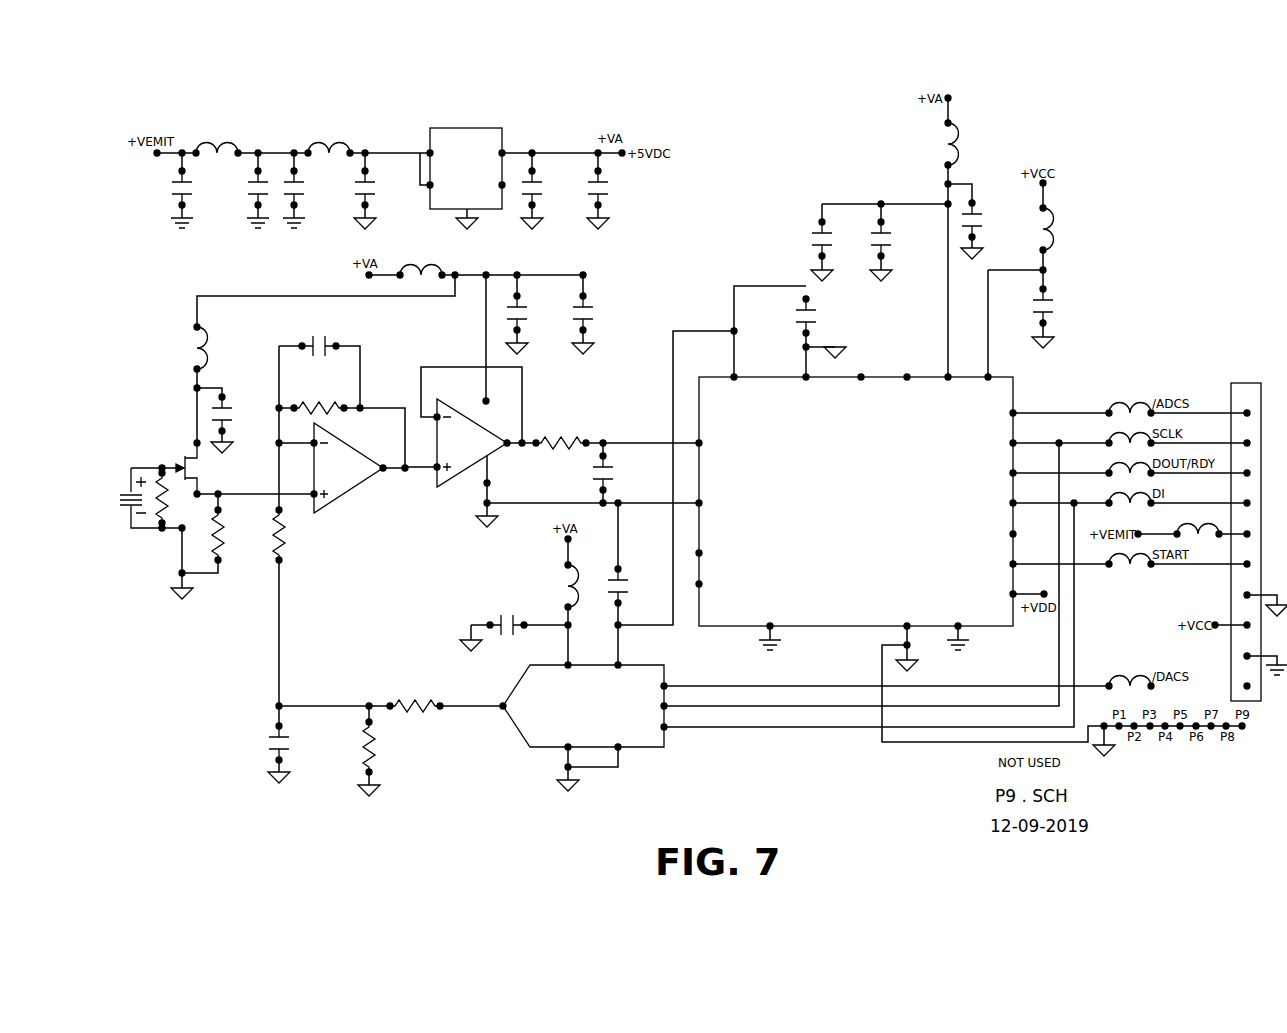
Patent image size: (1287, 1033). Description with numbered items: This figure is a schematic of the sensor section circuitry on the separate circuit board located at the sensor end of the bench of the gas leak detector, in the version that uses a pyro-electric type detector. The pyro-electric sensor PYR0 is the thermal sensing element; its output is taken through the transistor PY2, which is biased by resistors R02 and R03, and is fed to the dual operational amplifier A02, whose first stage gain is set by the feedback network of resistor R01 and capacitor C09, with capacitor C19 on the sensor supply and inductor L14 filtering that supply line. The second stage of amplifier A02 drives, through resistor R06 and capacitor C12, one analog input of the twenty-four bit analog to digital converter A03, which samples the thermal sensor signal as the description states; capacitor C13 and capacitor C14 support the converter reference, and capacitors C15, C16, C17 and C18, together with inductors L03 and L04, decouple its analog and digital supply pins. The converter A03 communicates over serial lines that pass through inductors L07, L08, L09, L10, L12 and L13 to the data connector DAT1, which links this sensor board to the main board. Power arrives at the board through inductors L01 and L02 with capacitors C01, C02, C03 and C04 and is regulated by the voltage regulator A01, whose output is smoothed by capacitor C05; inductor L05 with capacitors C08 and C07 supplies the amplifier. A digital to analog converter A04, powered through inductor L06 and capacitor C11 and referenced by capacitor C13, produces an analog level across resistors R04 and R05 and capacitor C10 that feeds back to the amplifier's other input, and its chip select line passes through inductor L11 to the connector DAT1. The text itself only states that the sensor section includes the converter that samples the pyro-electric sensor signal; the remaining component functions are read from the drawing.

The capacitor 0.01UF C01 is at (158, 188).
The capacitor 0.01UF C02 is at (235, 188).
The capacitor 0.1UF C03 is at (464, 188).
The capacitor 1UF C04 is at (377, 188).
The capacitor 10UF C05 is at (548, 188).
The capacitor 1UF C07 is at (595, 313).
The capacitor 0.1UF C08 is at (535, 313).
The capacitor 0.01UF C09 is at (318, 329).
The capacitor 0.1UF C10 is at (298, 743).
The capacitor 0.1UF C11 is at (507, 607).
The capacitor 0.1UF C12 is at (621, 473).
The capacitor 0.1UF C13 is at (636, 586).
The capacitor 1UF C14 is at (819, 316).
The capacitor 1UF C15 is at (835, 239).
The capacitor 0.1UF C16 is at (900, 239).
The capacitor 0.01UF C17 is at (995, 220).
The capacitor 1UF C18 is at (1056, 306).
The capacitor 0.1UF C19 is at (240, 414).
The inductor L01 is at (217, 143).
The inductor L02 is at (329, 143).
The inductor L03 is at (963, 144).
The inductor L04 is at (1058, 229).
The inductor L05 is at (421, 265).
The inductor L06 is at (559, 586).
The inductor L07 is at (1118, 406).
The inductor L08 is at (1118, 436).
The inductor L09 is at (1118, 466).
The inductor L10 is at (1118, 496).
The inductor L11 is at (1118, 679).
The inductor L12 is at (1118, 557).
The inductor L13 is at (1185, 527).
The inductor L14 is at (211, 348).
The resistor 1M R01 is at (319, 392).
The resistor 100K R02 is at (236, 535).
The resistor 10K R03 is at (293, 535).
The resistor R04 is at (415, 697).
The resistor R05 is at (384, 747).
The resistor 100 R06 is at (561, 432).
The voltage regulator MIC5235-5.0 A01 is at (467, 161).
The dual op amp LM358 A02 is at (410, 448).
The ADC ADS1247 A03 is at (856, 502).
The DAC MCP4921 A04 is at (582, 706).
The pyroelectric sensor PYR0 is at (152, 487).
The JFET transistor PY2 is at (194, 467).
The data connector DAT1 is at (1243, 534).